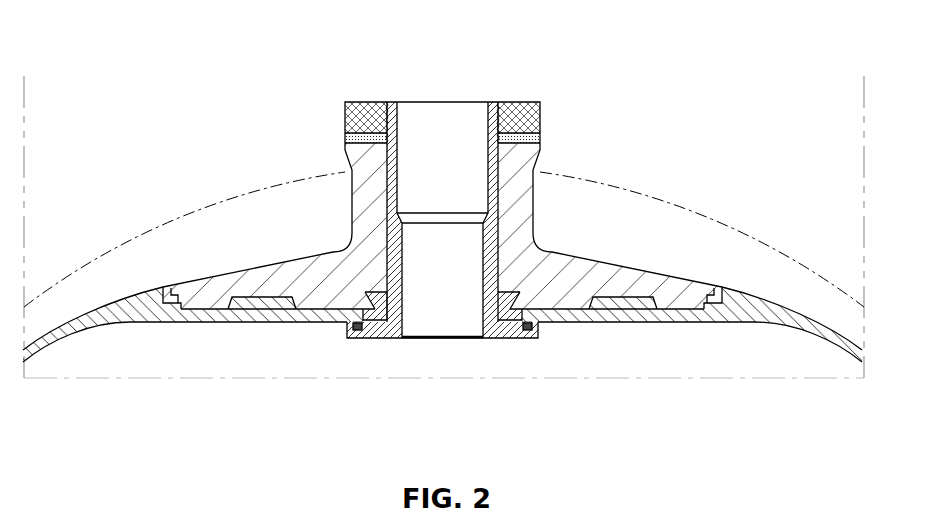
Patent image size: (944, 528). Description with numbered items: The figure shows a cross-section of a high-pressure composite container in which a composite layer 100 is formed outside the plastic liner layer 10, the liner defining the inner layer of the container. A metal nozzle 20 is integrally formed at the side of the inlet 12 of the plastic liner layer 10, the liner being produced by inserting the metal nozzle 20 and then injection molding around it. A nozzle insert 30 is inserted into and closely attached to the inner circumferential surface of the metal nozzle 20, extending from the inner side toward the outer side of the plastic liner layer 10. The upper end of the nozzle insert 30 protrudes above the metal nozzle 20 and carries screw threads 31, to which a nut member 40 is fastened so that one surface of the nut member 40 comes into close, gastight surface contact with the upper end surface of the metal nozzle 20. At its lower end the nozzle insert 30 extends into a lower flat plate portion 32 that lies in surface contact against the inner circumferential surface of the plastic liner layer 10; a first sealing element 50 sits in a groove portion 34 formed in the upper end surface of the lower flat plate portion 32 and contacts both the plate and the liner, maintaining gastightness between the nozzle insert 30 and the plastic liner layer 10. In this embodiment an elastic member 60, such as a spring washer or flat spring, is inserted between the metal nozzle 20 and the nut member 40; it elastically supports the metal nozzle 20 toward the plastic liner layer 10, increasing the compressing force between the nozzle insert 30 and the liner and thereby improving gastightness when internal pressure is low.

The plastic liner layer 10 is at (757, 311).
The inlet 12 is at (388, 303).
The metal nozzle 20 is at (662, 274).
The nozzle insert 30 is at (498, 237).
The screw threads 31 is at (508, 102).
The lower flat plate portion 32 is at (373, 333).
The groove portion 34 is at (358, 331).
The nut member 40 is at (530, 110).
The first sealing element 50 is at (357, 322).
The elastic member 60 is at (540, 137).
The composite layer 100 is at (670, 203).